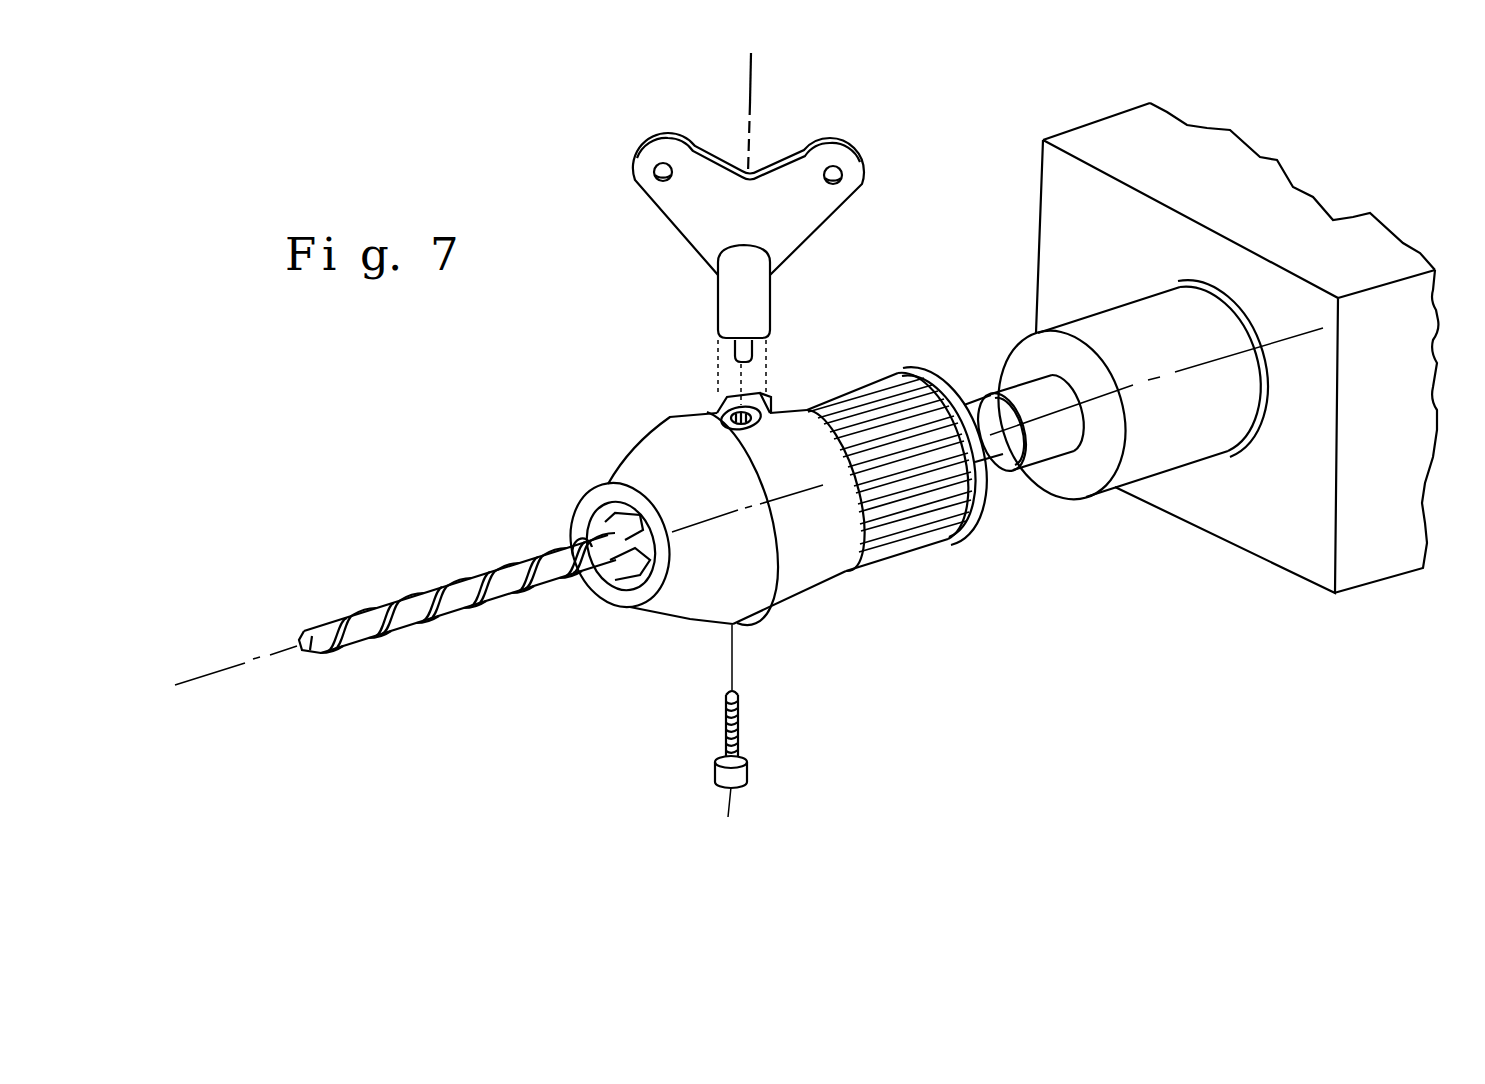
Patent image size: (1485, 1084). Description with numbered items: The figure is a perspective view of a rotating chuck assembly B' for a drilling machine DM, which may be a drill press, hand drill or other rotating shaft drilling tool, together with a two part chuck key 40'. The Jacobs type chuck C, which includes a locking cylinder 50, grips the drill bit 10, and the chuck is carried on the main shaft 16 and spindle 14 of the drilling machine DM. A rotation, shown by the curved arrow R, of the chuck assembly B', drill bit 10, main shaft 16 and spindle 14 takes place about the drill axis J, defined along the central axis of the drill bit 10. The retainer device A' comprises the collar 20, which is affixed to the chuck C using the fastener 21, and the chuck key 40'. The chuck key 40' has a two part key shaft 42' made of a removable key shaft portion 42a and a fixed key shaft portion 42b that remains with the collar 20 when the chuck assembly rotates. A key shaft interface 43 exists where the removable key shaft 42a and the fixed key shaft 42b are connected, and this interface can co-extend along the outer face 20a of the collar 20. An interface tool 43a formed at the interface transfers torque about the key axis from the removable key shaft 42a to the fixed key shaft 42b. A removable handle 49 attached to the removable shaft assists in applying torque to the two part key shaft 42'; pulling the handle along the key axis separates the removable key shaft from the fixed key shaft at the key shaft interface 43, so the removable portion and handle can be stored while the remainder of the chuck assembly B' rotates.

The chuck key 40' is at (804, 229).
The removable handle 49 is at (634, 168).
The two part key shaft 42' is at (823, 288).
The removable key shaft portion 42a is at (770, 318).
The fixed key shaft portion 42b is at (773, 403).
The key shaft interface 43 is at (717, 412).
The interface tool 43a is at (755, 352).
The collar 20 is at (603, 478).
The outer face of the collar 20a is at (835, 539).
The locking cylinder 50 is at (917, 547).
The main shaft 16 is at (967, 400).
The spindle 14 is at (1078, 500).
The drilling machine DM is at (1273, 567).
The drill bit 10 is at (410, 617).
The fastener 21 is at (738, 727).
The rotation R is at (455, 695).
The drill axis J is at (208, 668).
The retainer device A' is at (631, 254).
The chuck assembly B' is at (640, 710).
The chuck C is at (900, 578).